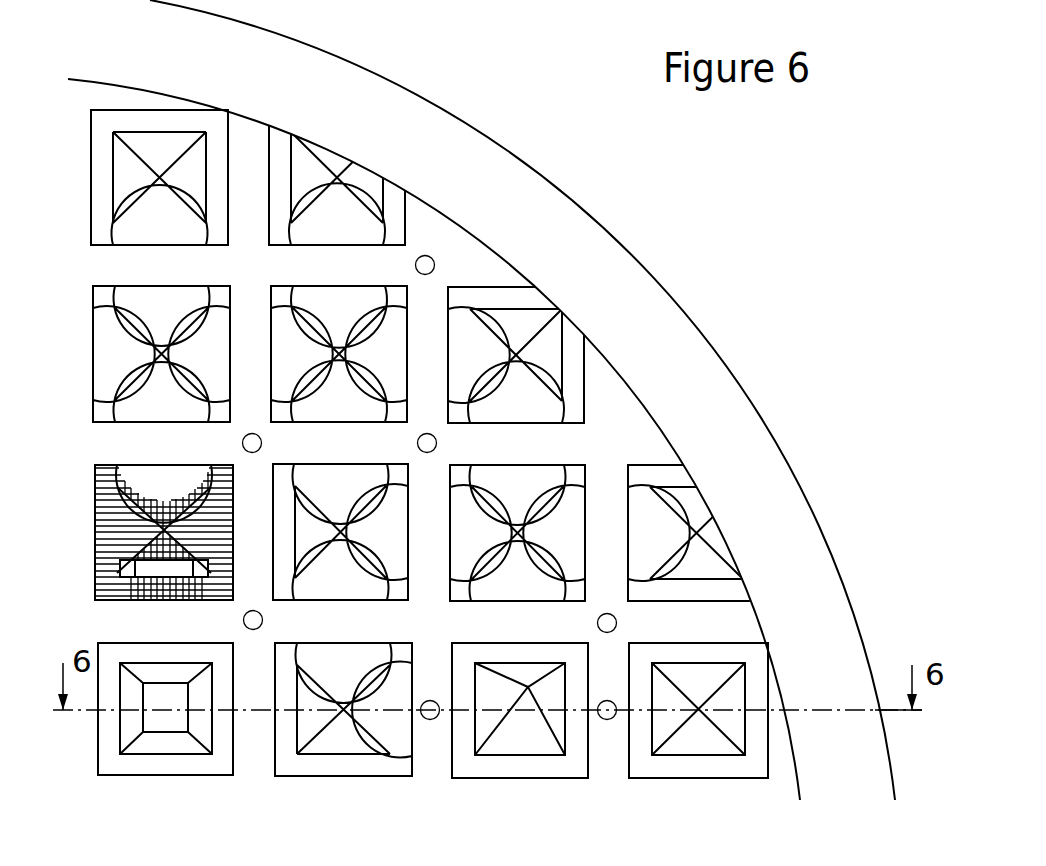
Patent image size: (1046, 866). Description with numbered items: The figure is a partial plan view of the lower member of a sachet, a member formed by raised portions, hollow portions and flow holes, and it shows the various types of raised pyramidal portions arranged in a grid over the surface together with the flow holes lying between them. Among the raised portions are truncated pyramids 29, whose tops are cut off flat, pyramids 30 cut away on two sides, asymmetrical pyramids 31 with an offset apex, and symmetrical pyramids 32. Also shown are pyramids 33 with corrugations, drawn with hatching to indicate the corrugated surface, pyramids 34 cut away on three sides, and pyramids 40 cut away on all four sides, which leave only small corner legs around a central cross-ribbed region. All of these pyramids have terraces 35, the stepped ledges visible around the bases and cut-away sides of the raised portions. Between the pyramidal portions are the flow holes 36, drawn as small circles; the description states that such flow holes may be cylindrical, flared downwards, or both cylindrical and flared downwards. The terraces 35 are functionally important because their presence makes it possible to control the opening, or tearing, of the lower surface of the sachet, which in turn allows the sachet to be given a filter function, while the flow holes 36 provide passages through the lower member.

The truncated pyramids 29 is at (157, 743).
The pyramids cut away on two sides 30 is at (340, 738).
The asymmetrical pyramids 31 is at (525, 743).
The symmetrical pyramids 32 is at (702, 743).
The pyramids with corrugations 33 is at (137, 578).
The pyramids cut away on three sides 34 is at (320, 572).
The terraces 35 is at (278, 227).
The flow holes 36 is at (437, 443).
The pyramids cut away on four sides 40 is at (507, 572).